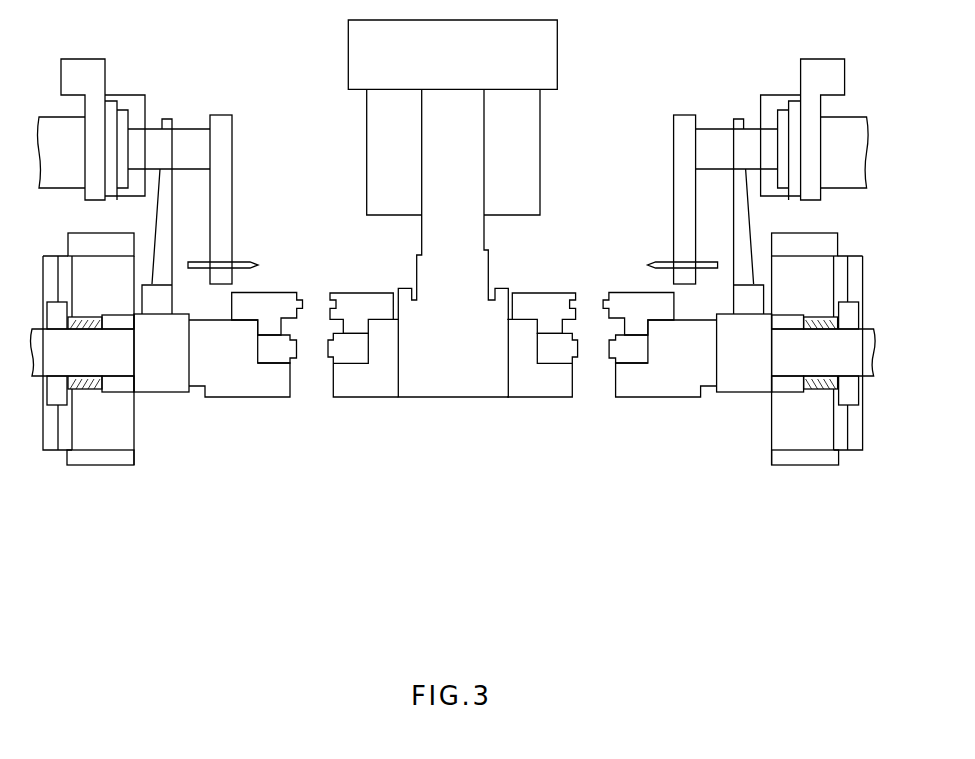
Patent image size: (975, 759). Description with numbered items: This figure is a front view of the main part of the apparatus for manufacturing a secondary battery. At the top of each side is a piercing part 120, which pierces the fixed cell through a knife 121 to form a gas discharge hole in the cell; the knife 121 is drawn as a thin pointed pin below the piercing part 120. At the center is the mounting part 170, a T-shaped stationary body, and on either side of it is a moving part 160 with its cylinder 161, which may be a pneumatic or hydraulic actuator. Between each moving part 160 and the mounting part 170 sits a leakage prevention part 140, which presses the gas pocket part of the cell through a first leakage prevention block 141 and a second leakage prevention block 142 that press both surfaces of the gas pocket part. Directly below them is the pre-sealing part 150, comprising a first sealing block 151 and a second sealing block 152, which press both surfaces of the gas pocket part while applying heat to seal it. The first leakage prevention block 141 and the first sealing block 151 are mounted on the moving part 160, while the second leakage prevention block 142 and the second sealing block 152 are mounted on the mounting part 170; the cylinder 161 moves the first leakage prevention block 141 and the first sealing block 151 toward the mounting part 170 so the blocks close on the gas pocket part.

The piercing part 120 is at (237, 133).
The knife 121 is at (247, 260).
The leakage prevention part 140 is at (453, 251).
The first leakage prevention block 141 is at (272, 300).
The second leakage prevention block 142 is at (370, 300).
The pre-sealing part 150 is at (453, 430).
The first sealing block 151 is at (295, 345).
The second sealing block 152 is at (327, 347).
The moving part 160 is at (148, 403).
The cylinder 161 is at (112, 365).
The mounting part 170 is at (451, 398).